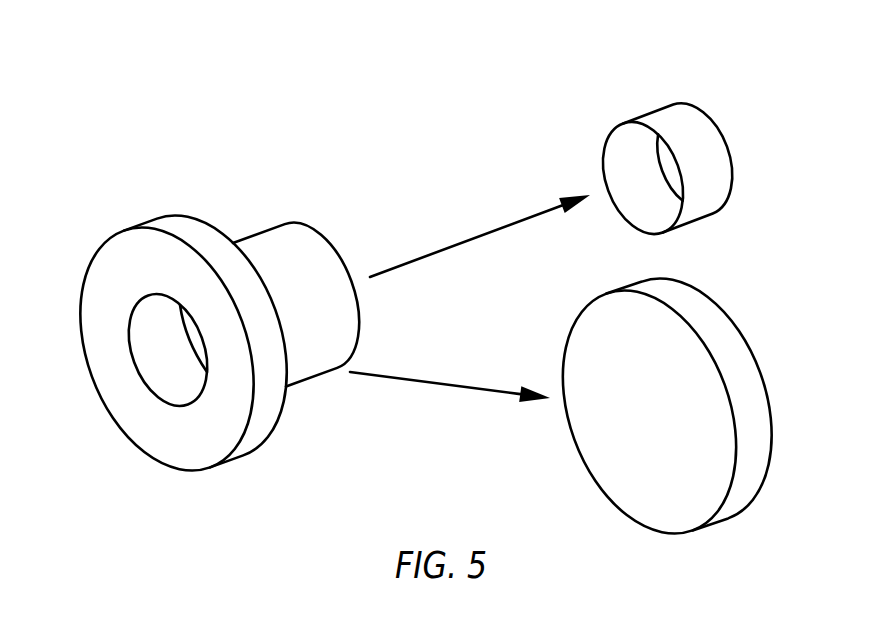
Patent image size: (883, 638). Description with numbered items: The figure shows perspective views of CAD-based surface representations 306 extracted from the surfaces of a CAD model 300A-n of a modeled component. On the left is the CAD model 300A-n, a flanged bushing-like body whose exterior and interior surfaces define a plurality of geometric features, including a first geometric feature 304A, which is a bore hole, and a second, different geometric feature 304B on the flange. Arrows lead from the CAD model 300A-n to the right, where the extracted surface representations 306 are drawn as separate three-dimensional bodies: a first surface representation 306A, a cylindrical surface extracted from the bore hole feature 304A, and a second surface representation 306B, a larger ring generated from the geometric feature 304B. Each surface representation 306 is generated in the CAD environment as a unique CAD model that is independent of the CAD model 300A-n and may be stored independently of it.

The CAD model 300A-n is at (256, 184).
The geometric feature 304A is at (147, 356).
The geometric feature 304B is at (263, 423).
The CAD-based surface representations 306 is at (784, 139).
The first surface representation 306A is at (668, 118).
The second surface representation 306B is at (710, 320).